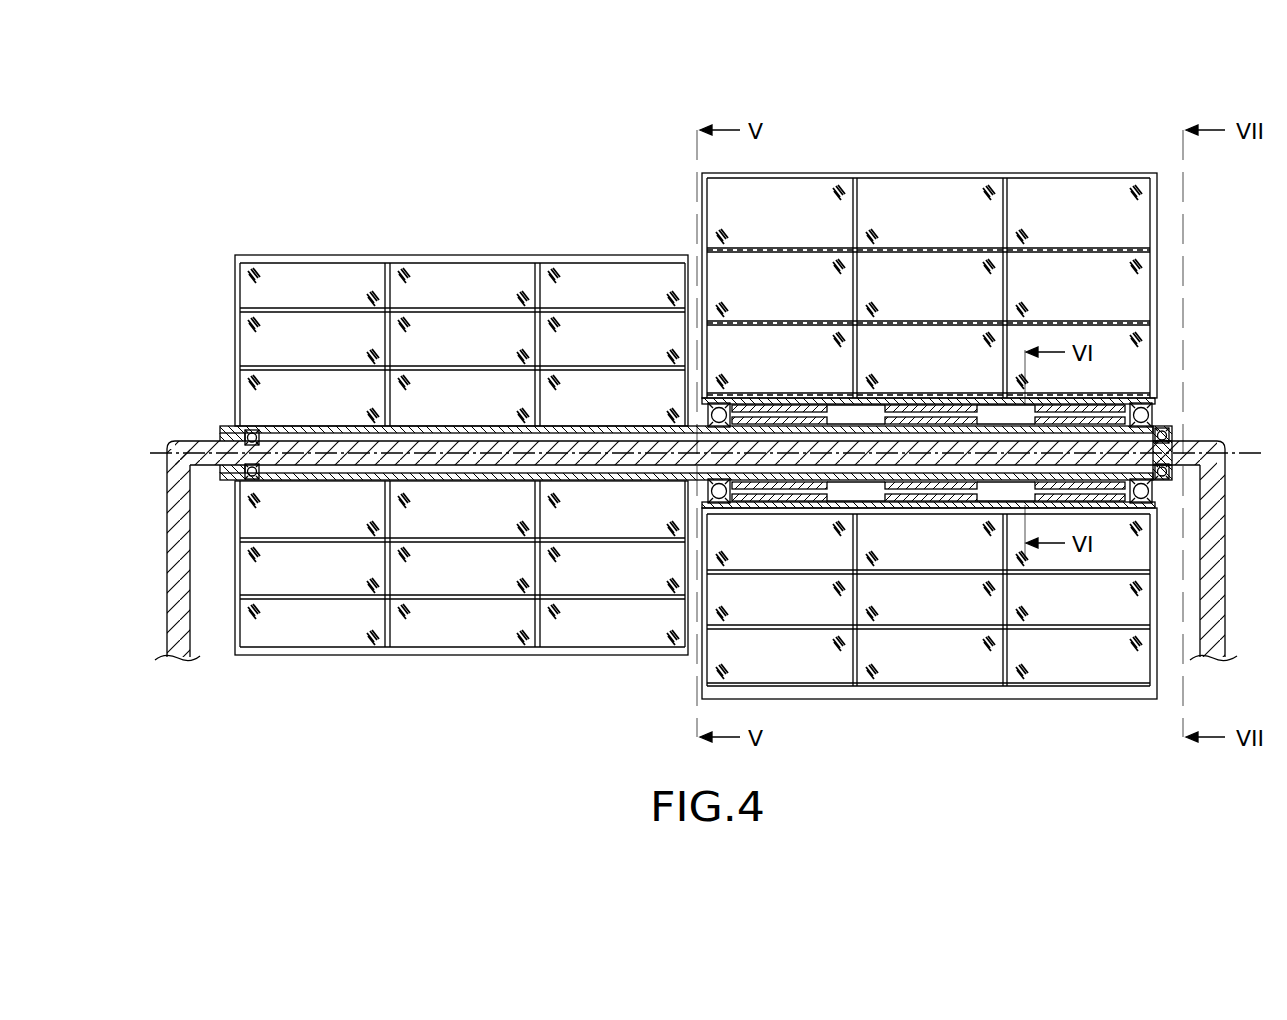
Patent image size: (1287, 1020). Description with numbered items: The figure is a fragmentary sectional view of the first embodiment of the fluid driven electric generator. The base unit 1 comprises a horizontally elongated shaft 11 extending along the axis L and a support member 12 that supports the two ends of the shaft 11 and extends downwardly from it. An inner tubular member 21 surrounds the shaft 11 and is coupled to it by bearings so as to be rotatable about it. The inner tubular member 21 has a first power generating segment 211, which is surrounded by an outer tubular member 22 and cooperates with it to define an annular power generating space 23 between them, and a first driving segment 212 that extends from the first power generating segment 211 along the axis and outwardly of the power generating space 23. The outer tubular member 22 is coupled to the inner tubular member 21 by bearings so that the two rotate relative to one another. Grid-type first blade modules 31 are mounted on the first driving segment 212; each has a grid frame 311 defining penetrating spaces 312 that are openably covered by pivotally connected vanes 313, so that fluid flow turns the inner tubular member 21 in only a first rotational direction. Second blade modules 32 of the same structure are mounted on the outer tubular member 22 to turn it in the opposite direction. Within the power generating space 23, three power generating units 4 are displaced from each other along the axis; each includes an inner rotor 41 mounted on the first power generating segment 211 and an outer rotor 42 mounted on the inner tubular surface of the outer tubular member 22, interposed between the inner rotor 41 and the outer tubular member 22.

The base unit 1 is at (113, 510).
The shaft 11 is at (205, 465).
The support member 12 is at (178, 596).
The inner tubular member 21 is at (635, 192).
The first power generating segment 211 is at (748, 322).
The first driving segment 212 is at (608, 430).
The outer tubular member 22 is at (1105, 398).
The annular power generating space 23 is at (995, 412).
The first blade module 31 is at (334, 262).
The grid frame 311 is at (242, 388).
The penetrating space 312 is at (245, 342).
The vane 313 is at (426, 278).
The second blade module 32 is at (808, 175).
The power generating unit 4 is at (807, 427).
The inner rotor 41 is at (928, 410).
The outer rotor 42 is at (958, 410).